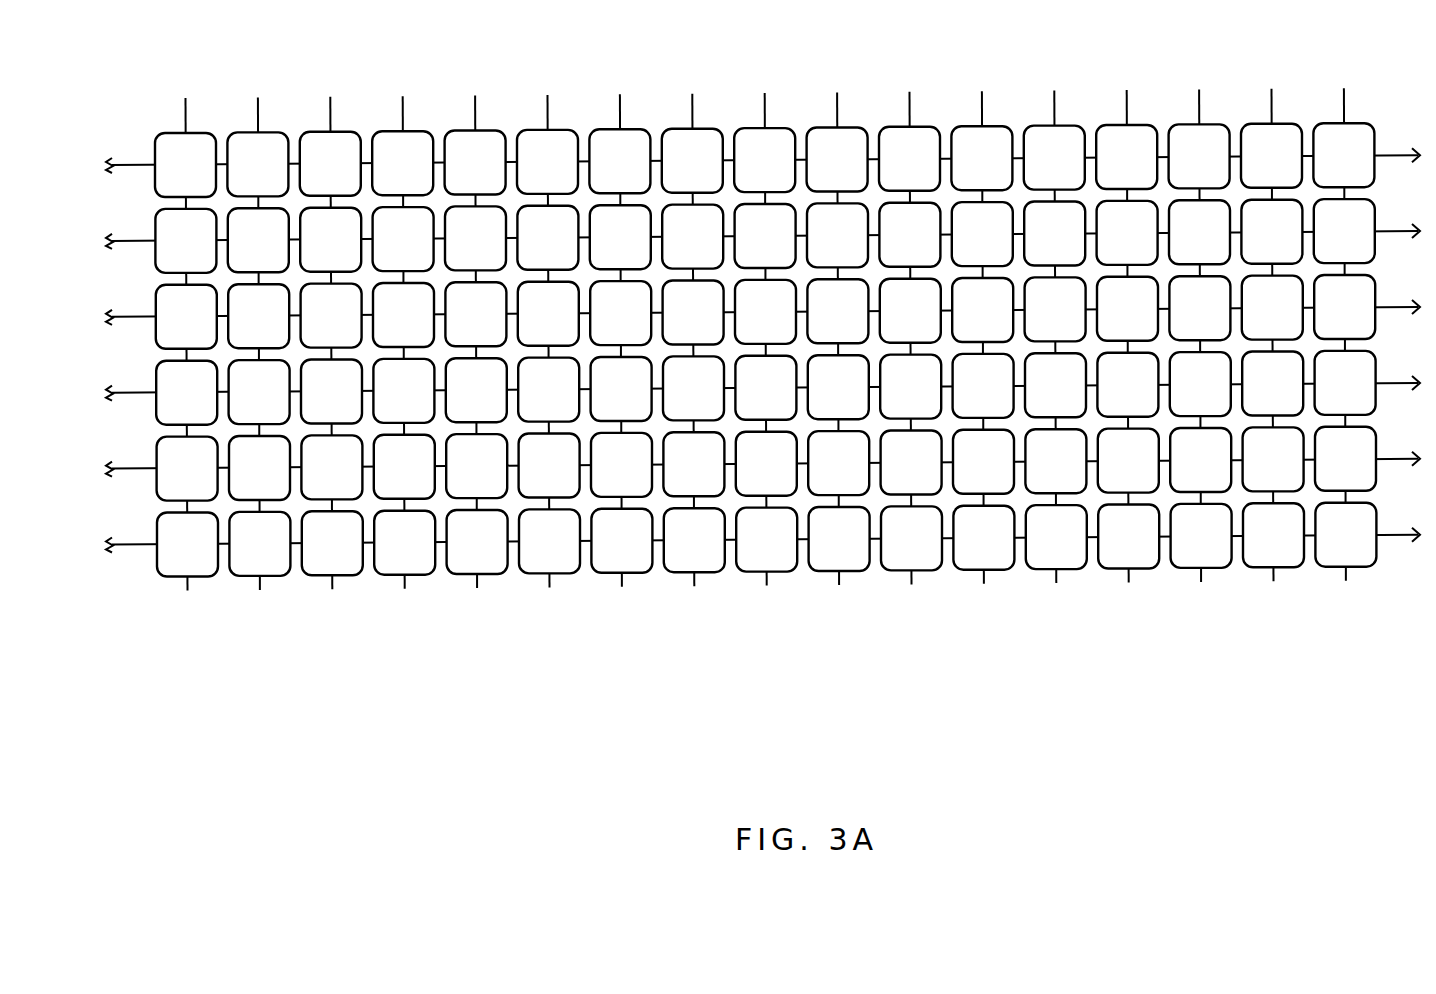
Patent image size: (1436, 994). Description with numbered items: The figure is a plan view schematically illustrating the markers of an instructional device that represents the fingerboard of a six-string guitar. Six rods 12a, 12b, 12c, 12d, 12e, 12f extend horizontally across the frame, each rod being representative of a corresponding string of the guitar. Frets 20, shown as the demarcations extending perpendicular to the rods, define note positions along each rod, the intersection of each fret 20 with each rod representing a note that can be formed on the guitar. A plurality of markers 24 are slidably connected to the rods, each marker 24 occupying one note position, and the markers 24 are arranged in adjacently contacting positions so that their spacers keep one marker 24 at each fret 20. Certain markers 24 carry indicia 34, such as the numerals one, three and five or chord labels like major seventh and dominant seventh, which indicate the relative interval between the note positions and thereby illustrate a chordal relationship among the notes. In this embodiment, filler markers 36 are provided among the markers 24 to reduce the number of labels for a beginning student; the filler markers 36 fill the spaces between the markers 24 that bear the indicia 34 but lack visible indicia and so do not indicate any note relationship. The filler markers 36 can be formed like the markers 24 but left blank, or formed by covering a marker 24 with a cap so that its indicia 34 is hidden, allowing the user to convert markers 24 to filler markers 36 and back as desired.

The rod 12a is at (117, 165).
The rod 12b is at (117, 241).
The rod 12c is at (117, 317).
The rod 12d is at (117, 393).
The rod 12e is at (117, 469).
The rod 12f is at (117, 544).
The fret 20 is at (763, 112).
The marker 24 is at (505, 132).
The indicia 34 is at (462, 150).
The filler marker 36 is at (636, 140).